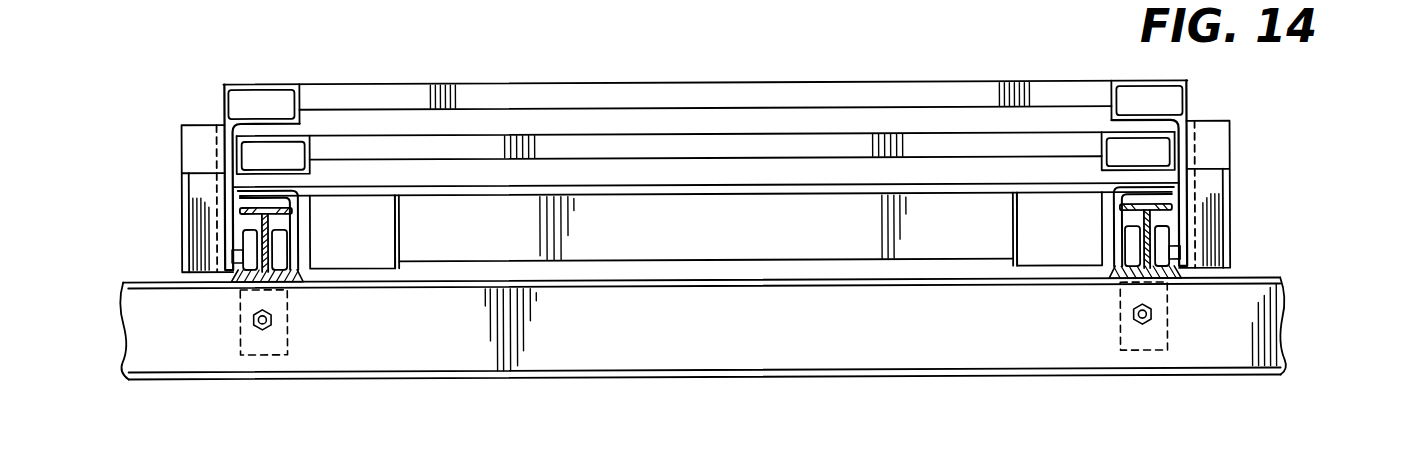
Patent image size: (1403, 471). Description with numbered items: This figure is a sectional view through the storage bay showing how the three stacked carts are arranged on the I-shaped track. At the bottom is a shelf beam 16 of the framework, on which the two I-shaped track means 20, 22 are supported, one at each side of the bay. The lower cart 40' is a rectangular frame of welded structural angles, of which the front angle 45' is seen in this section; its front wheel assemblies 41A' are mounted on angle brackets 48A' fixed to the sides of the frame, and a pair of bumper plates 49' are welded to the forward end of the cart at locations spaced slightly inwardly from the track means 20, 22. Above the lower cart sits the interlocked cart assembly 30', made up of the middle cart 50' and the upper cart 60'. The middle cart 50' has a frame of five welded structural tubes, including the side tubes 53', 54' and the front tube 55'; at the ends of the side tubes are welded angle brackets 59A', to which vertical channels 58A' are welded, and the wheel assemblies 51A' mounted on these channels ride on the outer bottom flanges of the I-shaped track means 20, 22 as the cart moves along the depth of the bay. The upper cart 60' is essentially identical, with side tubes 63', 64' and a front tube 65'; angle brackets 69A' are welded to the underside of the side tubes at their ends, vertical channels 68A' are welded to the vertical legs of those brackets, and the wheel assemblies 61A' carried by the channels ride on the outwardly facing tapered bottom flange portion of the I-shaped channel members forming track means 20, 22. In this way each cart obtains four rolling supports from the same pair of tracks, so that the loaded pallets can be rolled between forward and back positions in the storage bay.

The shelf beam 16 is at (826, 358).
The track means 20 is at (1140, 282).
The track means 22 is at (268, 275).
The interlocked cart assembly 30' is at (706, 188).
The lower cart 40' is at (706, 206).
The front wheel assembly 41A' is at (706, 265).
The front angle 45' is at (706, 228).
The angle bracket 48A' is at (706, 230).
The bumper plate 49' is at (706, 231).
The middle cart 50' is at (706, 101).
The wheel assembly 51A' is at (701, 289).
The side tube 53' is at (335, 164).
The side tube 54' is at (1088, 162).
The front tube 55' is at (706, 169).
The vertical channel 58A' is at (691, 221).
The angle bracket 59A' is at (703, 213).
The upper cart 60' is at (743, 107).
The wheel assembly 61A' is at (716, 255).
The side tube 63' is at (281, 78).
The side tube 64' is at (1187, 89).
The front tube 65' is at (705, 71).
The vertical channel 68A' is at (706, 193).
The angle bracket 69A' is at (724, 161).